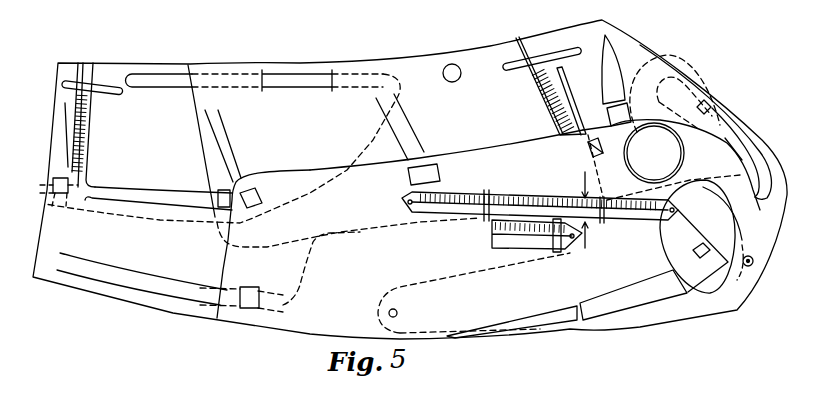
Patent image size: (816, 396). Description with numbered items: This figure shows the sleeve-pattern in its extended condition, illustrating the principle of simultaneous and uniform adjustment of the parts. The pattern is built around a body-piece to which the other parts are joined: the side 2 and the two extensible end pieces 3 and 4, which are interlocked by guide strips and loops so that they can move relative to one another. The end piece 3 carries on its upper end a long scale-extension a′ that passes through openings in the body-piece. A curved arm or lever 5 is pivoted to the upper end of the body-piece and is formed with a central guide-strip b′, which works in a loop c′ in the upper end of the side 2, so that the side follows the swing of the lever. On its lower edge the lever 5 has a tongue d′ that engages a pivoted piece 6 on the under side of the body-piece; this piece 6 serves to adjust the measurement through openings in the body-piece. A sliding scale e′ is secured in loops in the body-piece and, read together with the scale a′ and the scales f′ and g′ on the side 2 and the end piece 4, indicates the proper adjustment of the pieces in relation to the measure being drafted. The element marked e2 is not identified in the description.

The side 2 is at (446, 124).
The extensible end piece 3 is at (142, 273).
The extensible end piece 4 is at (148, 156).
The curved arm or lever 5 is at (743, 157).
The pivoted piece 6 is at (693, 236).
The scale-extension a′ is at (520, 248).
The central guide-strip b′ is at (733, 147).
The loop c′ is at (709, 104).
The tongue d′ is at (707, 256).
The sliding scale e′ is at (540, 196).
The pivot stud e2 is at (615, 195).
The scale f′ is at (92, 125).
The scale g′ is at (542, 87).